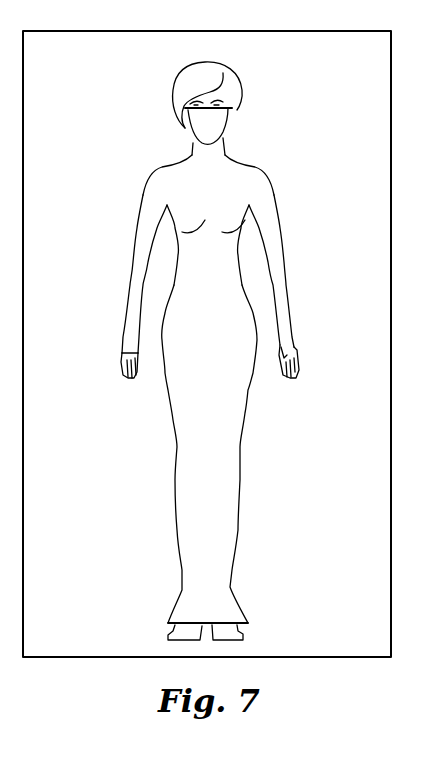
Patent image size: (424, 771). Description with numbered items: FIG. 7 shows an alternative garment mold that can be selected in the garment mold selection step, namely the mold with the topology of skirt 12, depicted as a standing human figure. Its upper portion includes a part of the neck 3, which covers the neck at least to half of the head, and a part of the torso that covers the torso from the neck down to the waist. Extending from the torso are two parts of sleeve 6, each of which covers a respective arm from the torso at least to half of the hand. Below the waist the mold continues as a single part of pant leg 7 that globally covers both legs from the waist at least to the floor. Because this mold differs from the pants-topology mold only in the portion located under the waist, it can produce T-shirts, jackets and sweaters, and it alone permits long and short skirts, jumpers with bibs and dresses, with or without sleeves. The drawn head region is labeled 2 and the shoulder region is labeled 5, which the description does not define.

The wig / hairpiece 2 is at (192, 85).
The part of the neck 3 is at (220, 122).
The garment bodice / shoulder portion 5 is at (193, 175).
The parts of sleeve 6 is at (135, 280).
The part of pant leg 7 is at (188, 468).
The mold with the topology of skirt 12 is at (217, 345).